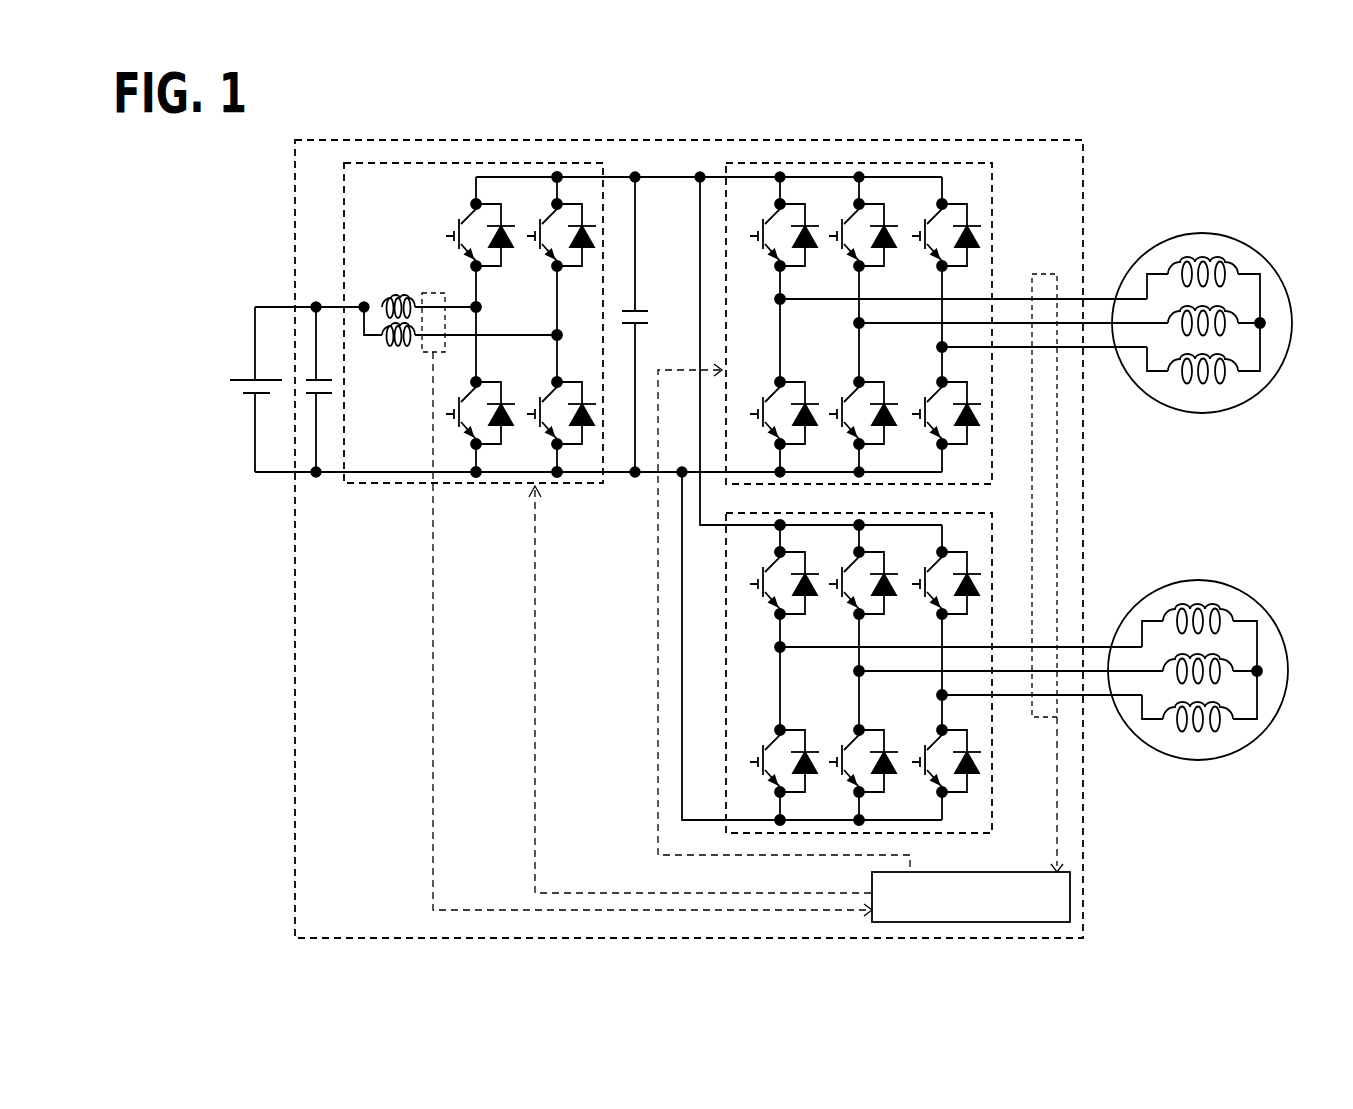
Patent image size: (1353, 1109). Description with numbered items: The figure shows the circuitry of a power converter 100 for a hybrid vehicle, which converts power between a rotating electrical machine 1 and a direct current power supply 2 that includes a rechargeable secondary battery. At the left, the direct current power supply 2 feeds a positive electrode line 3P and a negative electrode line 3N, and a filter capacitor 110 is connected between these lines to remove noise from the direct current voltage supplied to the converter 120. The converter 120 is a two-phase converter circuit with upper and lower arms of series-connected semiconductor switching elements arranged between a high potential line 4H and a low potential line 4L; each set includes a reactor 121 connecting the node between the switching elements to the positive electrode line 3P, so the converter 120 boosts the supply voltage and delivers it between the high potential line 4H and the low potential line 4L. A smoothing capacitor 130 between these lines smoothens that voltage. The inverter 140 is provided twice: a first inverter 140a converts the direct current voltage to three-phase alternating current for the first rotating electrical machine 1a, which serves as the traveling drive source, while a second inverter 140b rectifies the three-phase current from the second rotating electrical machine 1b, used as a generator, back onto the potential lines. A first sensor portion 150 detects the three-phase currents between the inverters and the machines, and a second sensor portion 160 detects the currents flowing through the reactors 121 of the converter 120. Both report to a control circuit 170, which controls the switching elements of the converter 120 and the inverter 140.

The power converter 100 is at (1060, 140).
The filter capacitor 110 is at (311, 375).
The converter 120 is at (592, 480).
The reactor 121 is at (397, 296).
The smoothing capacitor 130 is at (640, 303).
The inverter 140 is at (854, 450).
The first inverter 140a is at (950, 163).
The second inverter 140b is at (726, 678).
The first sensor portion 150 is at (1050, 274).
The second sensor portion 160 is at (430, 292).
The control circuit 170 is at (1005, 922).
The direct current power supply 2 is at (243, 378).
The positive electrode line 3P is at (330, 300).
The negative electrode line 3N is at (335, 476).
The high potential line 4H is at (615, 177).
The low potential line 4L is at (616, 478).
The rotating electrical machine 1 is at (1200, 464).
The first rotating electrical machine 1a is at (1205, 232).
The second rotating electrical machine 1b is at (1205, 580).